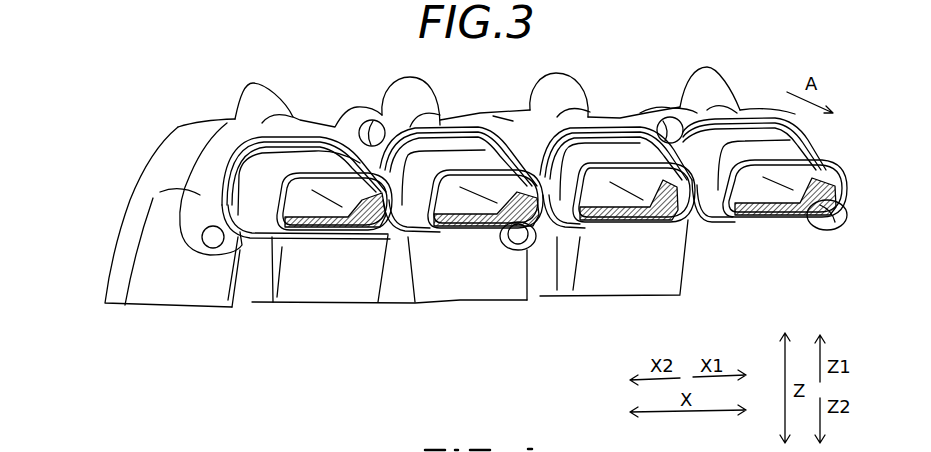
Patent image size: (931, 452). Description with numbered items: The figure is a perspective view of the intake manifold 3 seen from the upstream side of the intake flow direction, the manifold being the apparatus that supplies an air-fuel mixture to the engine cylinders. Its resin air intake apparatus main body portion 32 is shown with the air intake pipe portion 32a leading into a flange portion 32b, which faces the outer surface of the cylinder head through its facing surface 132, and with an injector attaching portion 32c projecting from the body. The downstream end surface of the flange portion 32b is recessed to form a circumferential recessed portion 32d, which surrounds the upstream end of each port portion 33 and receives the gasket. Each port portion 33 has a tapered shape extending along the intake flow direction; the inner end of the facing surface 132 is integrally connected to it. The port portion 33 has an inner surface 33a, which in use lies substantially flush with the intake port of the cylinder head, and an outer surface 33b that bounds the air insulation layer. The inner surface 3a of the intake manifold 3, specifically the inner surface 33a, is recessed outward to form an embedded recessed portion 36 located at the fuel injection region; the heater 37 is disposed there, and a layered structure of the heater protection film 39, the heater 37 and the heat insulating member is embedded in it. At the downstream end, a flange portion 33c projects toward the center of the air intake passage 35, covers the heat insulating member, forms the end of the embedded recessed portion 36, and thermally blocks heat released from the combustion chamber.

The intake manifold 3 is at (209, 85).
The air intake apparatus main body portion 32 is at (153, 128).
The air intake pipe portion 32a is at (123, 247).
The flange portion 32b is at (350, 107).
The injector attaching portion 32c is at (257, 97).
The recessed portion 32d is at (320, 118).
The air intake passage 35 is at (308, 186).
The facing surface 132 is at (381, 108).
The inner surface of the port portion 33a is at (410, 125).
The inner surface of the intake manifold 3a is at (622, 130).
The port portion 33 is at (298, 237).
The outer surface of the port portion 33b is at (237, 243).
The flange portion of the port portion 33c is at (263, 237).
The embedded recessed portion 36 is at (373, 235).
The heater 37 is at (352, 237).
The heater protection film 39 is at (327, 237).